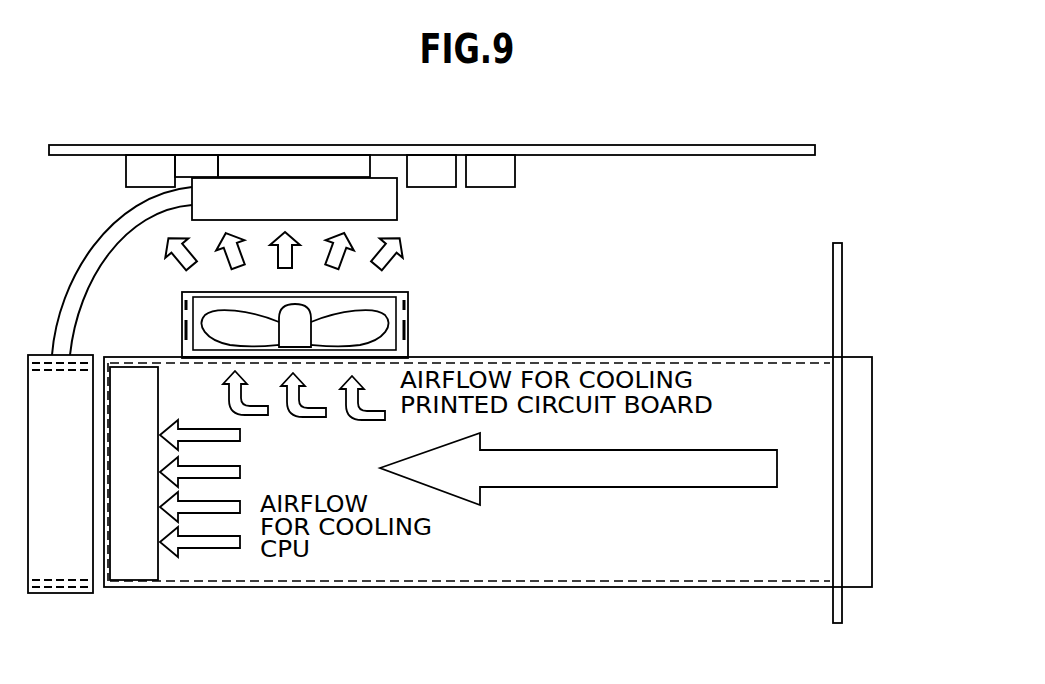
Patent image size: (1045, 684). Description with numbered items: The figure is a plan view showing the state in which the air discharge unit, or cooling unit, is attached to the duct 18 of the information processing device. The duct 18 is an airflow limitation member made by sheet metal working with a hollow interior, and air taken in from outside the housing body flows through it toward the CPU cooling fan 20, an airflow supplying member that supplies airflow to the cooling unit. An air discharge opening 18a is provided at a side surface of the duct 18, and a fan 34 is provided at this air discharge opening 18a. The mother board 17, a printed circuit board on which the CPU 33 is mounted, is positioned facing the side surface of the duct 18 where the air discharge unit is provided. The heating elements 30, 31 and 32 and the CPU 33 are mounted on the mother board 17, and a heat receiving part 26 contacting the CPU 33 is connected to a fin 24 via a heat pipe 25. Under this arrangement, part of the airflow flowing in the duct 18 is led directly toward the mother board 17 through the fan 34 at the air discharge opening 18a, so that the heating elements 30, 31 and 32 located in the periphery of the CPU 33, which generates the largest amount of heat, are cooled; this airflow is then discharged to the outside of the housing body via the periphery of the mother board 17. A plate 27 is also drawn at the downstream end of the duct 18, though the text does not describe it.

The mother board 17 is at (655, 148).
The duct 18 is at (650, 356).
The air discharge opening 18a is at (413, 356).
The CPU cooling fan 20 is at (135, 578).
The fin 24 is at (63, 578).
The heat pipe 25 is at (88, 246).
The heat receiving part 26 is at (270, 190).
The partition plate 27 is at (872, 350).
The heating element 30 is at (126, 173).
The heating element 31 is at (424, 187).
The heating element 32 is at (490, 187).
The CPU 33 is at (312, 165).
The fan 34 is at (412, 312).